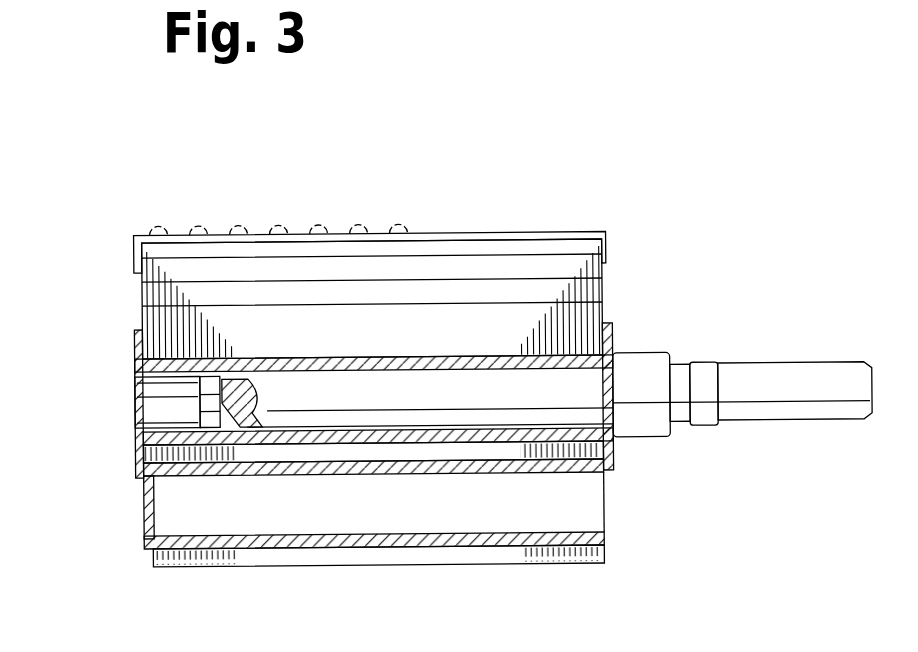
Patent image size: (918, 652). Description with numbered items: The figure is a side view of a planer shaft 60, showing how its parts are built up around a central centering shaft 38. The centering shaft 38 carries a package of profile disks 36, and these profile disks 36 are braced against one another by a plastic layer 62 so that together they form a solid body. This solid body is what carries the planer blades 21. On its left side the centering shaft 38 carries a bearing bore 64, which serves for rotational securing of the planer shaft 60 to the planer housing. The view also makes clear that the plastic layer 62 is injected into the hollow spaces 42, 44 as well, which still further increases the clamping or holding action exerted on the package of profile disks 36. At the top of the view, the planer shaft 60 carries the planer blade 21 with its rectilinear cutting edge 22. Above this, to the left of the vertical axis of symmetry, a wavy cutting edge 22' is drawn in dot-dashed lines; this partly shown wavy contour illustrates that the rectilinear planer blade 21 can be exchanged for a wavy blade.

The planer blade 21 is at (603, 231).
The rectilinear cutting edge 22 is at (370, 192).
The wavy cutting edge 22' is at (278, 176).
The profile disks 36 is at (145, 300).
The centering shaft 38 is at (783, 376).
The hollow space 42 is at (454, 510).
The hollow space 44 is at (575, 531).
The planer shaft 60 is at (625, 243).
The plastic layer 62 is at (608, 450).
The bearing bore 64 is at (160, 428).